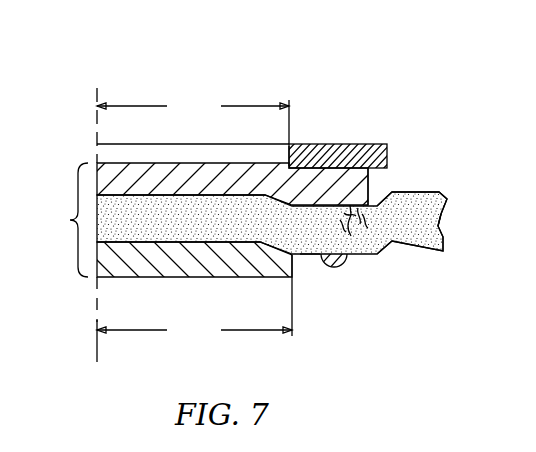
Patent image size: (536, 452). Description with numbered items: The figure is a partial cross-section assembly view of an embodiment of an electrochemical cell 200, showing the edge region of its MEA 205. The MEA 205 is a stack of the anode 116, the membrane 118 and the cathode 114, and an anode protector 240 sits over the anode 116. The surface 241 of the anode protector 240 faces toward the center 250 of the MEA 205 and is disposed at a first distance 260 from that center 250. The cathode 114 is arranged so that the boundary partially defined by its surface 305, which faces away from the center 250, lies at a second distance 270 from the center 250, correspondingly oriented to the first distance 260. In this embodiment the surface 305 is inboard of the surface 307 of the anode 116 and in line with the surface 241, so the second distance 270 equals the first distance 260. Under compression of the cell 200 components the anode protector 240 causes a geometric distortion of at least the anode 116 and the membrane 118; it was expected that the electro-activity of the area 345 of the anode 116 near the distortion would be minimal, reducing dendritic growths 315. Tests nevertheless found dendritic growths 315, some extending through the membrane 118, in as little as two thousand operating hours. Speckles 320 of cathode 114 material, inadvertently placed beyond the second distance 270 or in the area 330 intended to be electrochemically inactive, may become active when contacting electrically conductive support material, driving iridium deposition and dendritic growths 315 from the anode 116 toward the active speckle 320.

The cell 200 is at (219, 77).
The center of the MEA 250 is at (97, 97).
The first distance 260 is at (193, 119).
The second distance 270 is at (194, 310).
The MEA 205 is at (55, 220).
The anode protector 240 is at (363, 144).
The surface of the anode protector 241 is at (286, 153).
The anode 116 is at (118, 164).
The cathode 114 is at (182, 278).
The area of the anode 345 is at (283, 213).
The membrane 118 is at (425, 191).
The surface of the anode 307 is at (370, 185).
The dendritic growths 315 is at (392, 226).
The speckles 320 is at (348, 262).
The area intended to be electrochemically inactive 330 is at (318, 276).
The surface of the cathode 305 is at (300, 272).